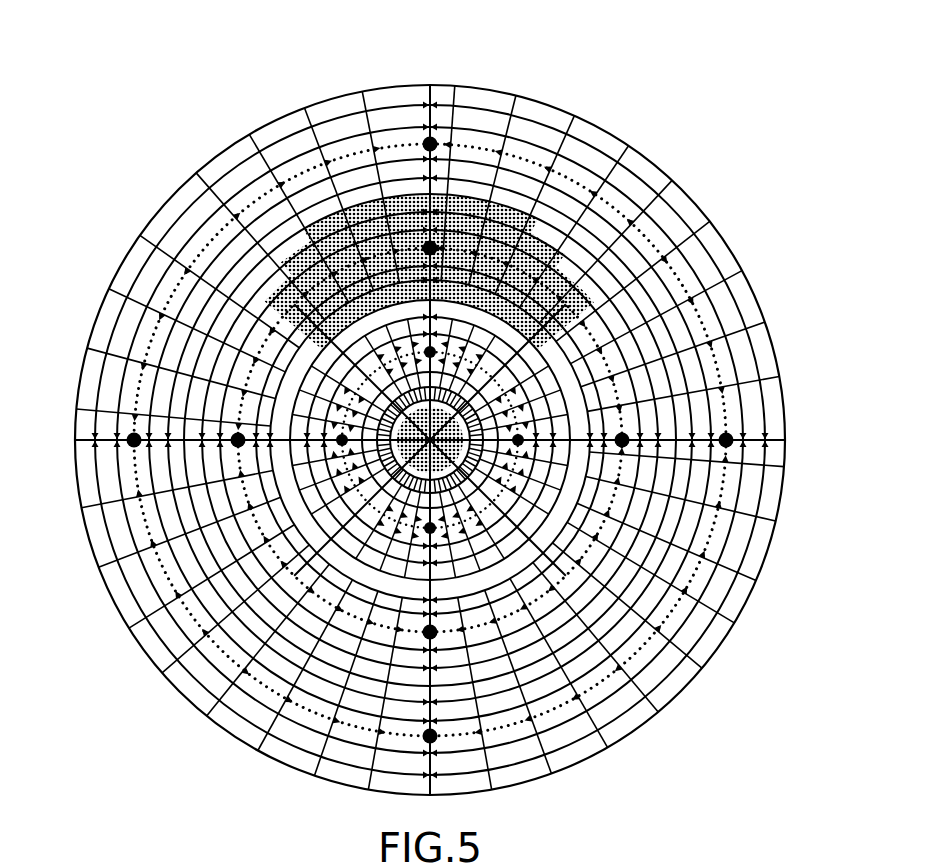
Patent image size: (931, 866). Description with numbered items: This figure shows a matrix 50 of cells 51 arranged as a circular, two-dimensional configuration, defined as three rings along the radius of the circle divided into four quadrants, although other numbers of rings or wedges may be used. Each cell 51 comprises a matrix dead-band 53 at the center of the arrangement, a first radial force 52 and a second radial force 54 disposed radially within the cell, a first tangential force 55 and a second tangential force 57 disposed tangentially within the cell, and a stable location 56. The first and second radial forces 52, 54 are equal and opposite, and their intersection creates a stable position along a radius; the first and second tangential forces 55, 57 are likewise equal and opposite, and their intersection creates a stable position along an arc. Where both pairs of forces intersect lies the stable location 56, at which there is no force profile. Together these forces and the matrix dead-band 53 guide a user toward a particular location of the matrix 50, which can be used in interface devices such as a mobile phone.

The matrix 50 is at (704, 148).
The cell 51 is at (566, 226).
The first radial force 52 is at (328, 142).
The matrix dead-band 53 is at (430, 440).
The second radial force 54 is at (322, 205).
The first tangential force 55 is at (137, 343).
The stable location 56 is at (424, 243).
The second tangential force 57 is at (116, 472).